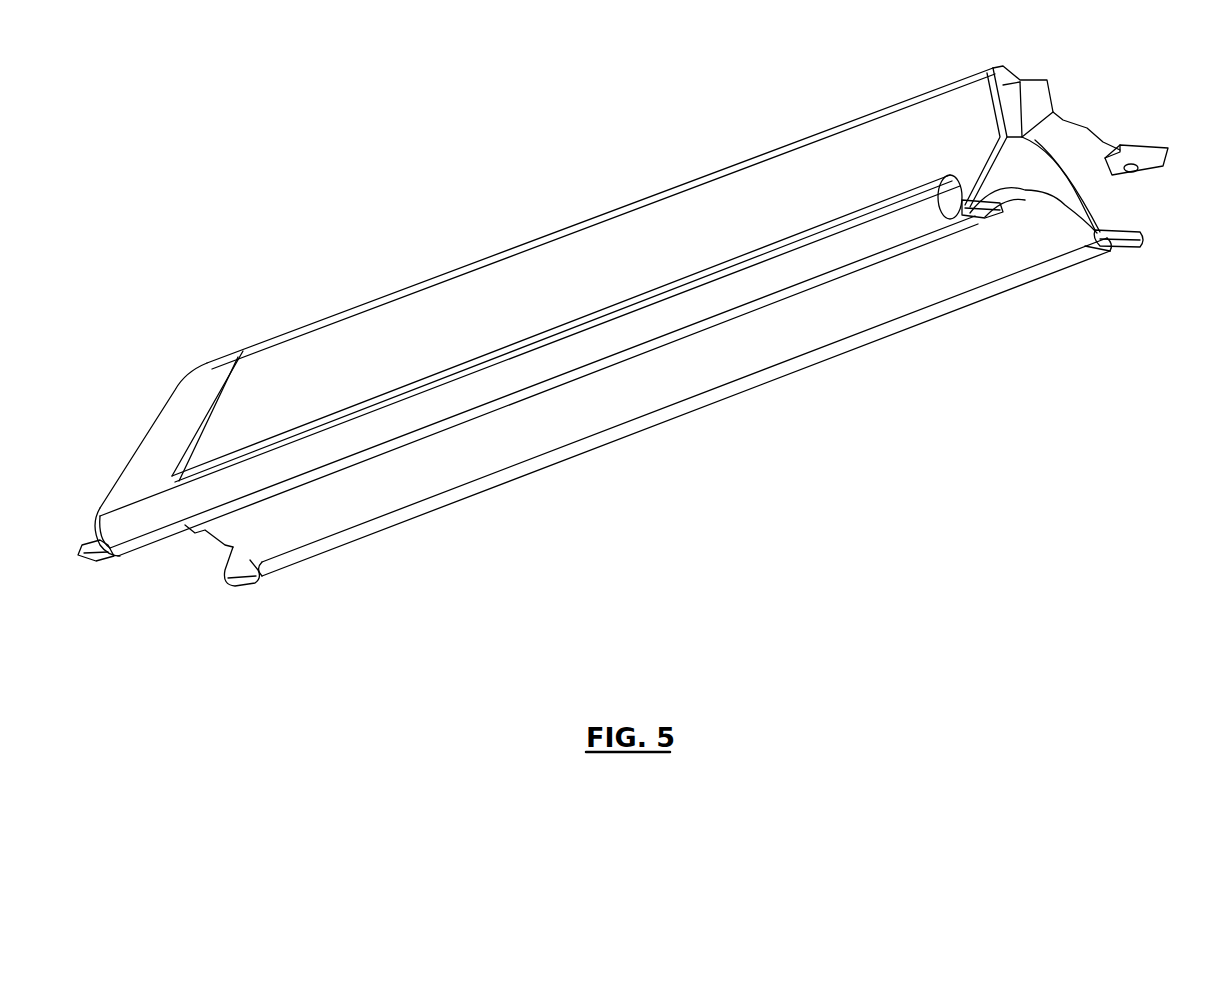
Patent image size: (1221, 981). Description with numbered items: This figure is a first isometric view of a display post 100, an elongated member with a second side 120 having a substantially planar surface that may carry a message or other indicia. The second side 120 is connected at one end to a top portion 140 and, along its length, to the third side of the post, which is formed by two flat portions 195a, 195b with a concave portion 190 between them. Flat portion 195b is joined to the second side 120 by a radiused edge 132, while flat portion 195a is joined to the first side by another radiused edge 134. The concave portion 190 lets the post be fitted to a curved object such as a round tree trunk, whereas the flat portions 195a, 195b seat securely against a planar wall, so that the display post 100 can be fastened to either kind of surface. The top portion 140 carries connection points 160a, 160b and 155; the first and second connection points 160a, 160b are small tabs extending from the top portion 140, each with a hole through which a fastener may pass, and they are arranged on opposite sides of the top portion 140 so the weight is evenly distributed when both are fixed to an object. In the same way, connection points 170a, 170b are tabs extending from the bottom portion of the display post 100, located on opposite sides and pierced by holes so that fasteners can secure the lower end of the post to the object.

The display post 100 is at (623, 376).
The second side 120 is at (330, 365).
The radiused edge 132 is at (443, 400).
The radiused edge 134 is at (1127, 252).
The top portion 140 is at (1000, 135).
The connection point 155 is at (1113, 160).
The first connection point 160a is at (1145, 243).
The second connection point 160b is at (973, 207).
The connection point 170a is at (225, 583).
The connection point 170b is at (80, 558).
The concave portion 190 is at (205, 535).
The flat portion 195a is at (277, 568).
The flat portion 195b is at (372, 455).